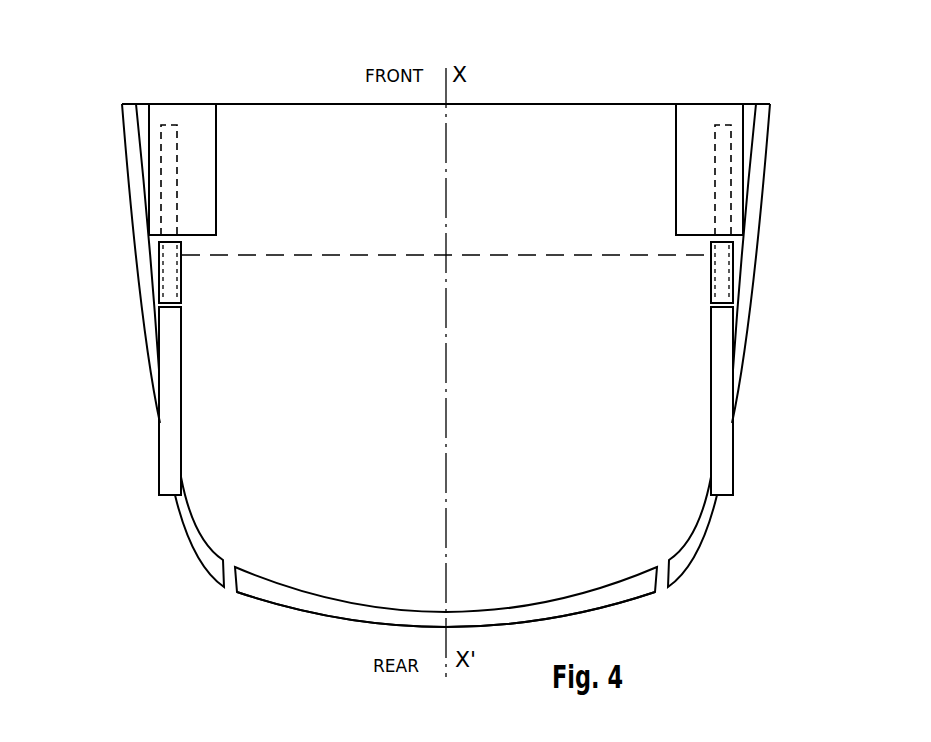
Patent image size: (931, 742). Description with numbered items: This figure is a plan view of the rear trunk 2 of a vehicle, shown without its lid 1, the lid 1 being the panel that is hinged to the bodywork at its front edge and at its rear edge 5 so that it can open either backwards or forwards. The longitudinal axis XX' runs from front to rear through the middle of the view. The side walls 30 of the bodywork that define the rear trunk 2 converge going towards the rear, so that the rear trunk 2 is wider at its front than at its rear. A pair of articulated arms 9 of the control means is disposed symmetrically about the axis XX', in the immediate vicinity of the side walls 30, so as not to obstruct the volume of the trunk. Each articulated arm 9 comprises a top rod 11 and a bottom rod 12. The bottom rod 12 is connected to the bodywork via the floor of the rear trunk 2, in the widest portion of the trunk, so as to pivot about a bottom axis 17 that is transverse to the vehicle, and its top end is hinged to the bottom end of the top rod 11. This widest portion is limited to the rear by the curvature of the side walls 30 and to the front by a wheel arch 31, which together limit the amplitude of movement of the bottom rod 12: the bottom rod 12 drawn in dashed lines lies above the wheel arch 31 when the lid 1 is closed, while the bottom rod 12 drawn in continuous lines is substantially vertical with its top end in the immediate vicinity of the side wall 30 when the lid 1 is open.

The lid 1 is at (518, 647).
The rear trunk 2 is at (511, 354).
The rear edge 5 is at (600, 603).
The articulated arm 9 is at (205, 283).
The top rod 11 is at (170, 462).
The bottom rod 12 is at (173, 170).
The bottom axis 17 is at (632, 256).
The side wall 30 is at (150, 380).
The wheel arch 31 is at (152, 178).